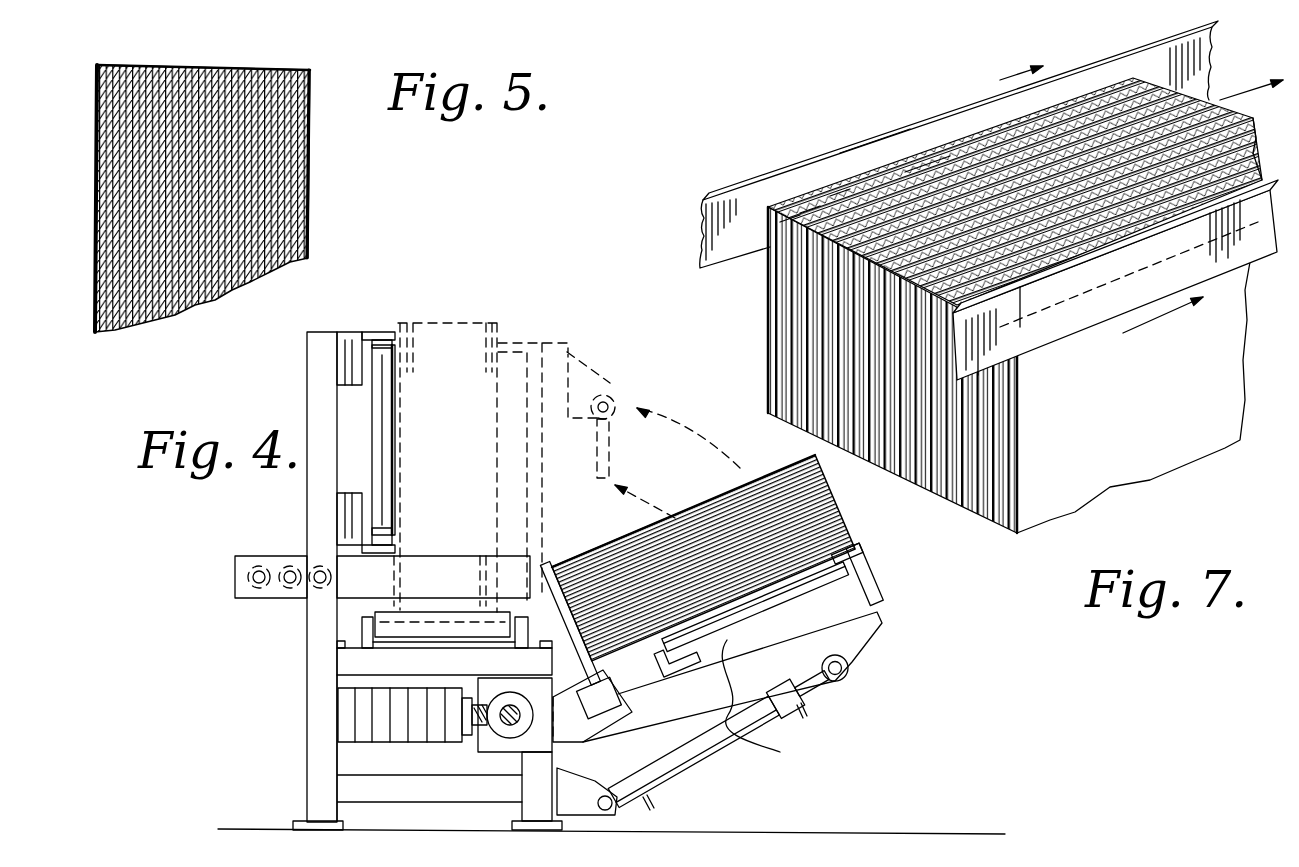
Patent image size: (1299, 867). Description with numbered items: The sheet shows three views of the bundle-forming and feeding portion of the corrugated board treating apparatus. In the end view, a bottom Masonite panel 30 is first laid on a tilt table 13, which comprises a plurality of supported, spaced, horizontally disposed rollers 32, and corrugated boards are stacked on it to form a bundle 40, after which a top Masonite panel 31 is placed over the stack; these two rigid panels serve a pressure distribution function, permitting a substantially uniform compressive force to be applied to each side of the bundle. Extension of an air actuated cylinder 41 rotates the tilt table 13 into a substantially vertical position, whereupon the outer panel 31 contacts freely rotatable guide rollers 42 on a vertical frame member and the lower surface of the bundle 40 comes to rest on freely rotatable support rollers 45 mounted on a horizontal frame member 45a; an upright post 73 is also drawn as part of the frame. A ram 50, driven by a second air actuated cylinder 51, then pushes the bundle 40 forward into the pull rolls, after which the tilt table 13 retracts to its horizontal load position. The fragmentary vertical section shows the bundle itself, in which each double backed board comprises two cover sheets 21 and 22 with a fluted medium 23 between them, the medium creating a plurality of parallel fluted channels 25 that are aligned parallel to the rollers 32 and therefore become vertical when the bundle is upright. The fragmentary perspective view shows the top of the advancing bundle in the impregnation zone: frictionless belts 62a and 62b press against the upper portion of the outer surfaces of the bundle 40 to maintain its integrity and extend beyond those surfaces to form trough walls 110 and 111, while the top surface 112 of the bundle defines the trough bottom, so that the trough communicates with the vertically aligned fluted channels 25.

In FIG. 4, the tilt table 13 is at (612, 382).
In FIG. 7, the cover sheet 21 is at (787, 220).
In FIG. 7, the cover sheet 22 is at (838, 193).
In FIG. 7, the fluted medium 23 is at (808, 210).
In FIG. 7, the fluted channels 25 is at (940, 177).
In FIG. 5, the Masonite panel 30 is at (318, 150).
In FIG. 4, the Masonite panel 30 is at (877, 597).
In FIG. 7, the Masonite panel 30 is at (984, 305).
In FIG. 5, the Masonite panel 31 is at (97, 155).
In FIG. 4, the Masonite panel 31 is at (790, 462).
In FIG. 7, the Masonite panel 31 is at (768, 370).
In FIG. 4, the rollers 32 is at (520, 382).
In FIG. 5, the bundle 40 is at (221, 198).
In FIG. 4, the bundle 40 is at (667, 457).
In FIG. 7, the bundle 40 is at (964, 305).
In FIG. 4, the air actuated cylinder 41 is at (700, 770).
In FIG. 4, the guide rollers 42 is at (378, 400).
In FIG. 4, the support rollers 45 is at (444, 612).
In FIG. 4, the horizontal frame member 45a is at (350, 660).
In FIG. 4, the ram 50 is at (464, 562).
In FIG. 4, the air actuated cylinder 51 is at (282, 552).
In FIG. 7, the frictionless belt 62a is at (919, 144).
In FIG. 7, the frictionless belt 62b is at (967, 358).
In FIG. 4, the upright post 73 is at (322, 342).
In FIG. 7, the trough wall 110 is at (875, 155).
In FIG. 7, the trough wall 111 is at (1085, 277).
In FIG. 7, the top surface 112 is at (1103, 120).